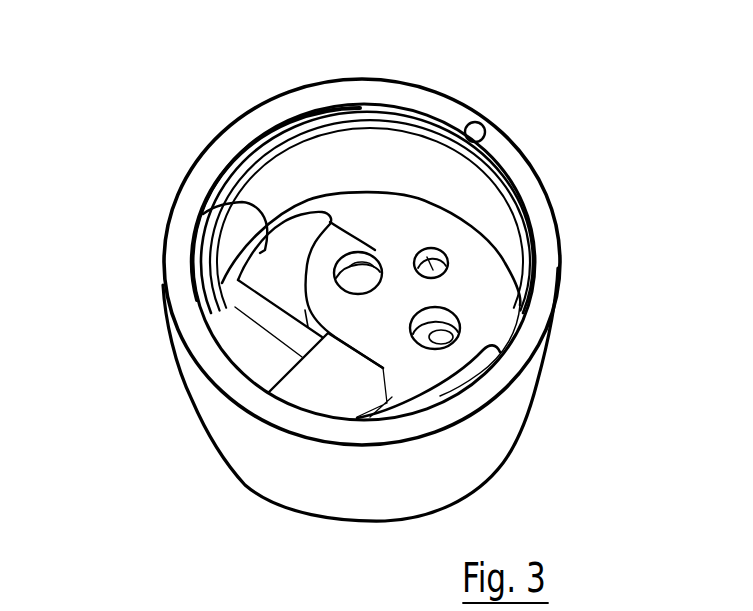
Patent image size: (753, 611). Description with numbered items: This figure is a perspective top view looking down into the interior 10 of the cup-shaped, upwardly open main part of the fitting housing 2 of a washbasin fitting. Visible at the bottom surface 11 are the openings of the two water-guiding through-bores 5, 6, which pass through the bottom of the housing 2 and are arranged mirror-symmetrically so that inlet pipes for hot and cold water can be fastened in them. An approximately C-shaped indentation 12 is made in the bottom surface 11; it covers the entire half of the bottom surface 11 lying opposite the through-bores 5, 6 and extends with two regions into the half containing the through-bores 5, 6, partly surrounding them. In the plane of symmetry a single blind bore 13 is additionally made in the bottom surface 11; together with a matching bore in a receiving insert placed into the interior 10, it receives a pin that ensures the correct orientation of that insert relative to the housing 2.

The fitting housing 2 is at (258, 461).
The through-bore 5 is at (427, 350).
The through-bore 6 is at (334, 224).
The interior 10 is at (420, 148).
The bottom surface 11 is at (490, 302).
The C-shaped indentation 12 is at (230, 206).
The blind bore 13 is at (448, 270).